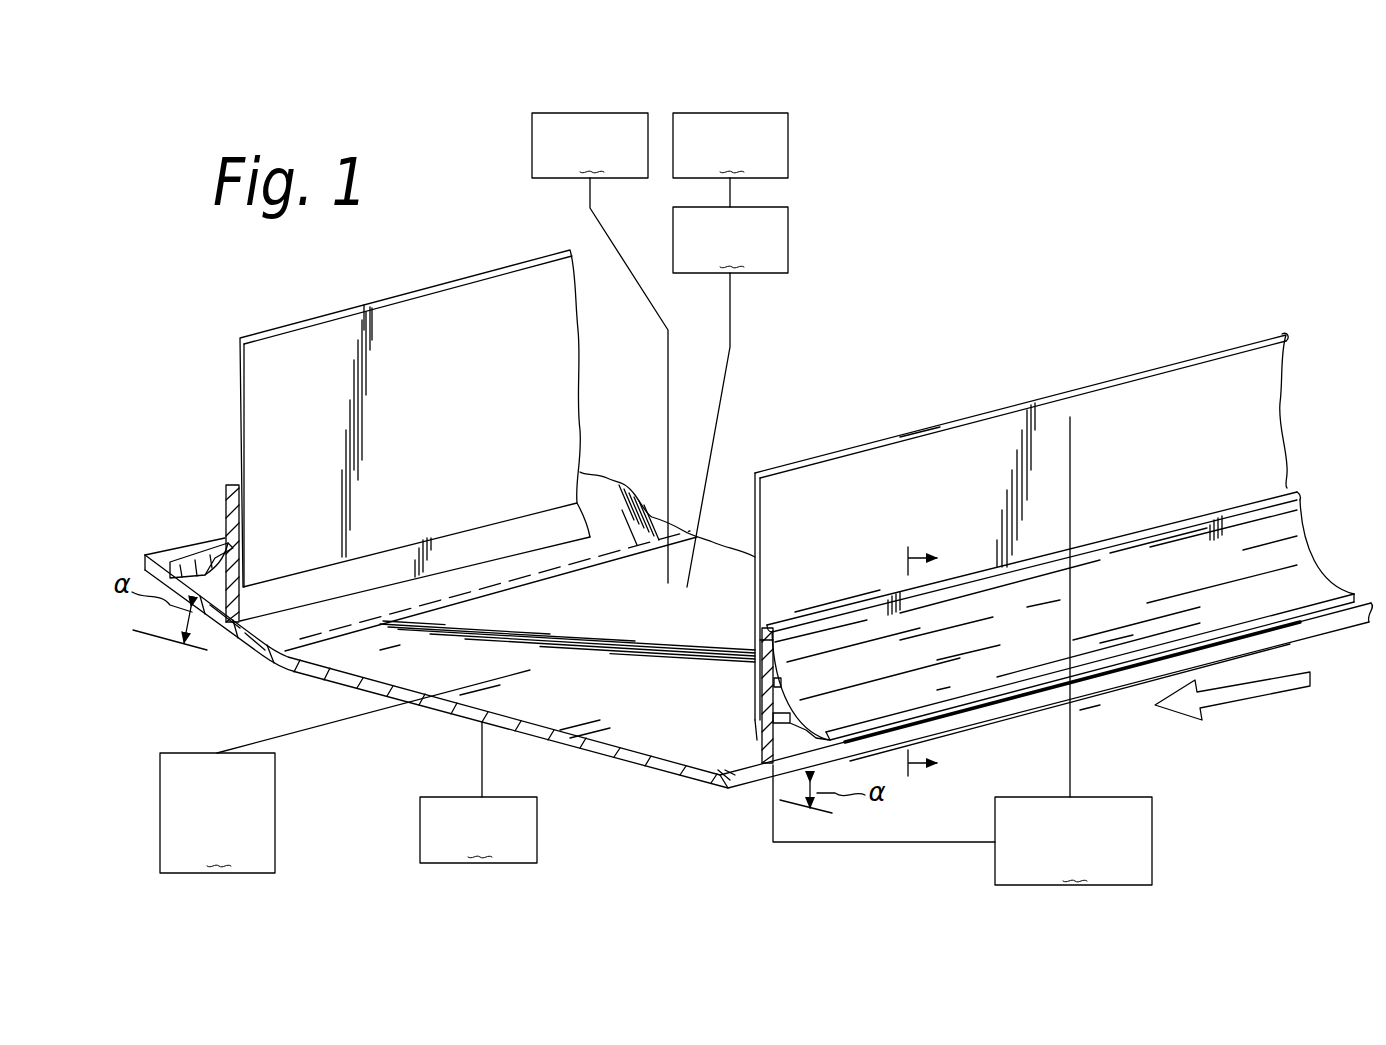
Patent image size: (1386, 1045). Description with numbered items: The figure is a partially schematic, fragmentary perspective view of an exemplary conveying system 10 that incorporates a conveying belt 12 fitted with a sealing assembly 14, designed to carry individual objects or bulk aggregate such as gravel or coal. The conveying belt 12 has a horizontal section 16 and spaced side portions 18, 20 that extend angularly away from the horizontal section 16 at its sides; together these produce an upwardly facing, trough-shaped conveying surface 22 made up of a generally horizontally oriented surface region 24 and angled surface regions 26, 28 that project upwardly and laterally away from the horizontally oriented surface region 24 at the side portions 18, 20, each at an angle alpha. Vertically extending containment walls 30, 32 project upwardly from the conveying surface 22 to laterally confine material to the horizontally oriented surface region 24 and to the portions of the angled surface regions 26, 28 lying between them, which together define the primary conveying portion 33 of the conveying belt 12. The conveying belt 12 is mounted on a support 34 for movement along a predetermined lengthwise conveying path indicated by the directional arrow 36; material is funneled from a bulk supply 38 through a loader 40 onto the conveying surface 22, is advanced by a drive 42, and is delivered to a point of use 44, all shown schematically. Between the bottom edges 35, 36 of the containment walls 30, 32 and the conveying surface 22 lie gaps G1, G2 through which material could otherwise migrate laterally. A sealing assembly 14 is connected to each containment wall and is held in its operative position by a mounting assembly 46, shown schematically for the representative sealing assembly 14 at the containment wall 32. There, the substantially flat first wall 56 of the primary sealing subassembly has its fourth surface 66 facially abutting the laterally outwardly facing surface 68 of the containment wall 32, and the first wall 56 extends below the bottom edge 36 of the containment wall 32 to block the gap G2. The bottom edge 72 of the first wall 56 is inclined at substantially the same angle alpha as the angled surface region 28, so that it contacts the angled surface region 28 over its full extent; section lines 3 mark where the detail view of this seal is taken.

The conveying system 10 is at (1065, 220).
The conveying belt 12 is at (645, 718).
The sealing assembly 14 is at (222, 535).
The horizontal section 16 is at (488, 688).
The side portion 18 is at (232, 643).
The side portion 20 is at (1093, 697).
The conveying surface 22 is at (588, 722).
The horizontally oriented surface region 24 is at (388, 647).
The angled surface region 26 is at (258, 637).
The angled surface region 28 is at (730, 763).
The containment wall 30 is at (406, 313).
The containment wall 32 is at (1132, 388).
The primary conveying portion 33 is at (580, 699).
The support 34 is at (478, 792).
The bottom edge 35 is at (522, 518).
The directional arrow 36 is at (733, 760).
The bulk supply 38 is at (730, 160).
The loader 40 is at (730, 397).
The drive 42 is at (600, 348).
The point of use 44 is at (345, 771).
The mounting assembly 46 is at (962, 651).
The first wall 56 is at (777, 707).
The fourth surface 66 is at (760, 685).
The laterally outwardly facing surface 68 is at (932, 448).
The bottom edge 72 is at (767, 767).
The section line 3- 3 is at (933, 660).
The gap G1 is at (478, 545).
The gap G2 is at (750, 725).